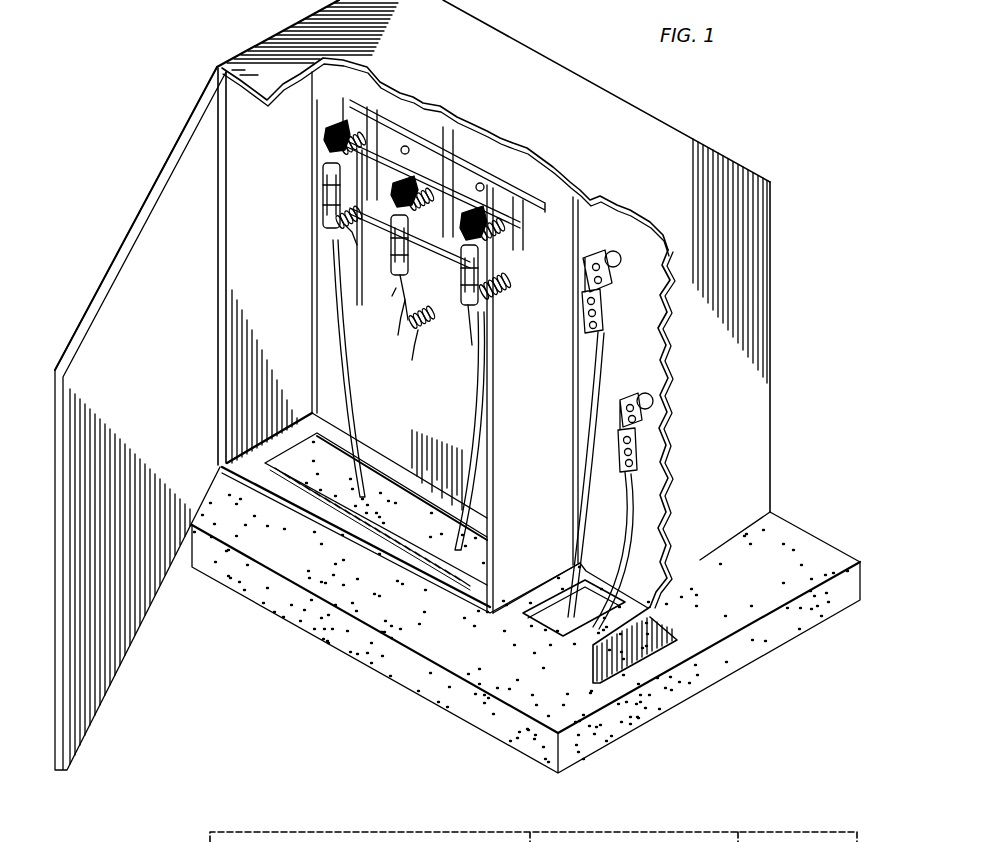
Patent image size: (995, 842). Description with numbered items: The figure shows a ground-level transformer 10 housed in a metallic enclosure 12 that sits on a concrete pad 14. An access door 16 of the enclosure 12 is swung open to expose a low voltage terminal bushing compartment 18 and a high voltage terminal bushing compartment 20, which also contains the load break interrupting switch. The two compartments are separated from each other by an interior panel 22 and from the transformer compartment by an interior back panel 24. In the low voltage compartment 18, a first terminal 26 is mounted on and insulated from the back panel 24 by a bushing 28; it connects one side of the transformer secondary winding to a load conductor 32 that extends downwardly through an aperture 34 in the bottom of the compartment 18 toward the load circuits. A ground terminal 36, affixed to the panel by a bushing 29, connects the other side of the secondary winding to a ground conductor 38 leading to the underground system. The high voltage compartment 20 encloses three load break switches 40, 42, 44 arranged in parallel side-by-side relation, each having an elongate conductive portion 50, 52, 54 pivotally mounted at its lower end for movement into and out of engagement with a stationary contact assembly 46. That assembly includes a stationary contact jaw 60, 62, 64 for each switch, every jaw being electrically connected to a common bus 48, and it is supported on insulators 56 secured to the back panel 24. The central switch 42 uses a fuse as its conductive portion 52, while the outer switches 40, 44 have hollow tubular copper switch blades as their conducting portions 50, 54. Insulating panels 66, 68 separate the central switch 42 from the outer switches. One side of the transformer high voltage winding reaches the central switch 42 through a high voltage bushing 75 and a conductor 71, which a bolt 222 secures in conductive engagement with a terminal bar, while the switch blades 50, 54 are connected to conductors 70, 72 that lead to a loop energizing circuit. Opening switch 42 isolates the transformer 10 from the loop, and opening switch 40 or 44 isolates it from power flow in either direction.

The ground-level transformer 10 is at (752, 114).
The metallic enclosure 12 is at (754, 424).
The concrete pad 14 is at (332, 623).
The access door 16 is at (123, 622).
The low voltage terminal bushing compartment 18 is at (628, 376).
The high voltage terminal bushing compartment 20 is at (410, 444).
The interior panel 22 is at (538, 450).
The interior back panel 24 is at (645, 574).
The first terminal 26 is at (604, 320).
The bushing 28 is at (612, 267).
The bushing 29 is at (655, 403).
The load conductor 32 is at (562, 532).
The aperture 34 is at (548, 608).
The ground terminal 36 is at (618, 452).
The ground conductor 38 is at (622, 512).
The load break switch 40 is at (328, 240).
The load break switch 42 is at (392, 283).
The load break switch 44 is at (468, 322).
The stationary contact assembly 46 is at (445, 151).
The common bus 48 is at (417, 152).
The conductive portion 50 is at (322, 200).
The conductive portion 52 is at (395, 240).
The conductive portion 54 is at (458, 282).
The insulators 56 is at (378, 116).
The stationary contact jaw 60 is at (330, 146).
The stationary contact jaw 62 is at (393, 165).
The stationary contact jaw 64 is at (458, 186).
The insulating panel 66 is at (375, 275).
The insulating panel 68 is at (428, 338).
The conductor 70 is at (333, 368).
The conductor 71 is at (406, 322).
The conductor 72 is at (487, 418).
The high voltage bushing 75 is at (416, 342).
The bolt 222 is at (396, 292).